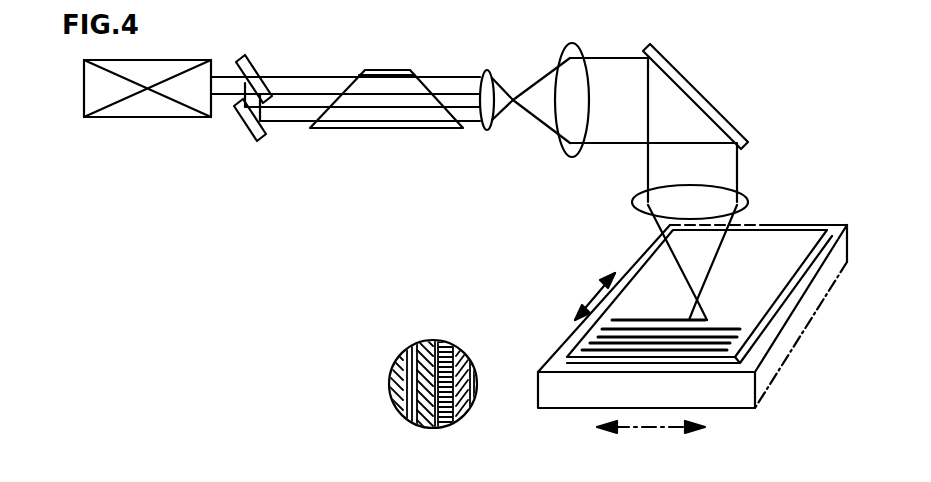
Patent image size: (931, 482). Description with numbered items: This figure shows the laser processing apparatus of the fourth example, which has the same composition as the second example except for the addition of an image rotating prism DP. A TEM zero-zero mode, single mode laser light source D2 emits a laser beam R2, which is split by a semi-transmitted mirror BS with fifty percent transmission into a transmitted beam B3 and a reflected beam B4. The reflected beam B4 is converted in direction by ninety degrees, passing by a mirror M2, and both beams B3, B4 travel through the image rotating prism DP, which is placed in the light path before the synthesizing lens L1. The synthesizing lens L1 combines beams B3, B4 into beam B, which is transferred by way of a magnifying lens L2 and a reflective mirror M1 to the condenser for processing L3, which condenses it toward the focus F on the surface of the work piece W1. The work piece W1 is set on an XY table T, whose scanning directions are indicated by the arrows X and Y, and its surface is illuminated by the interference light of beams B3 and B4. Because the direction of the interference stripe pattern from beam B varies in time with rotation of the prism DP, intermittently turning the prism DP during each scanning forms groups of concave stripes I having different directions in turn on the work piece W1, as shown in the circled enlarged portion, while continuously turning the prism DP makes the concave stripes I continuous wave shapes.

The laser light source D2 is at (89, 82).
The laser beam R2 is at (221, 88).
The semi-transmitted mirror BS is at (247, 67).
The mirror M2 is at (248, 128).
The transmitted beam B3 is at (315, 83).
The reflected beam B4 is at (300, 118).
The image rotating prism DP is at (390, 70).
The synthesizing lens L1 is at (513, 57).
The magnifying lens L2 is at (607, 33).
The reflective mirror M1 is at (703, 107).
The beam B is at (718, 170).
The condenser for processing L3 is at (737, 210).
The focal point F is at (697, 297).
The XY table T is at (538, 374).
The work piece W1 is at (743, 343).
The concave stripes I is at (468, 358).
The Y scanning direction Y is at (596, 292).
The X scanning direction X is at (673, 428).